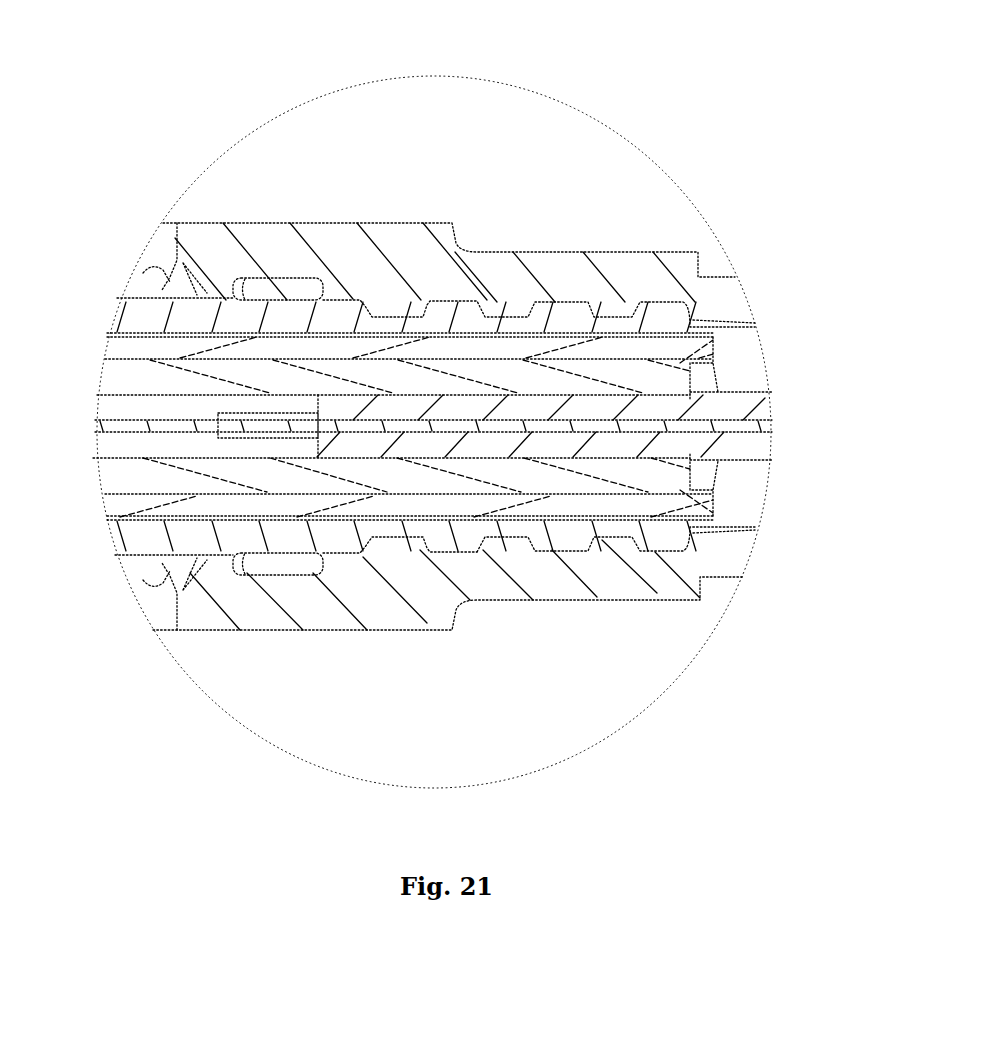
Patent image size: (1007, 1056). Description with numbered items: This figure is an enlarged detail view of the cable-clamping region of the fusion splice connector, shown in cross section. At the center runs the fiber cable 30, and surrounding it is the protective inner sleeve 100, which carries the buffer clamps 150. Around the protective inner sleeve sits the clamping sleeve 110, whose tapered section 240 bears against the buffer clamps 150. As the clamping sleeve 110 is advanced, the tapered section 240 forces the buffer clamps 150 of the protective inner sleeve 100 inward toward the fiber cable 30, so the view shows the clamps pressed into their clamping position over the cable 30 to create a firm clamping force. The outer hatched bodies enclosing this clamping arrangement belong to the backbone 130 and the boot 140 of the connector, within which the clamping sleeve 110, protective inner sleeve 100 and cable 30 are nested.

The fiber cable 30 is at (745, 415).
The protective inner sleeve 100 is at (267, 370).
The clamping sleeve 110 is at (453, 350).
The backbone 130 is at (662, 532).
The boot 140 is at (496, 265).
The buffer clamps 150 is at (635, 382).
The tapered section 240 is at (607, 360).